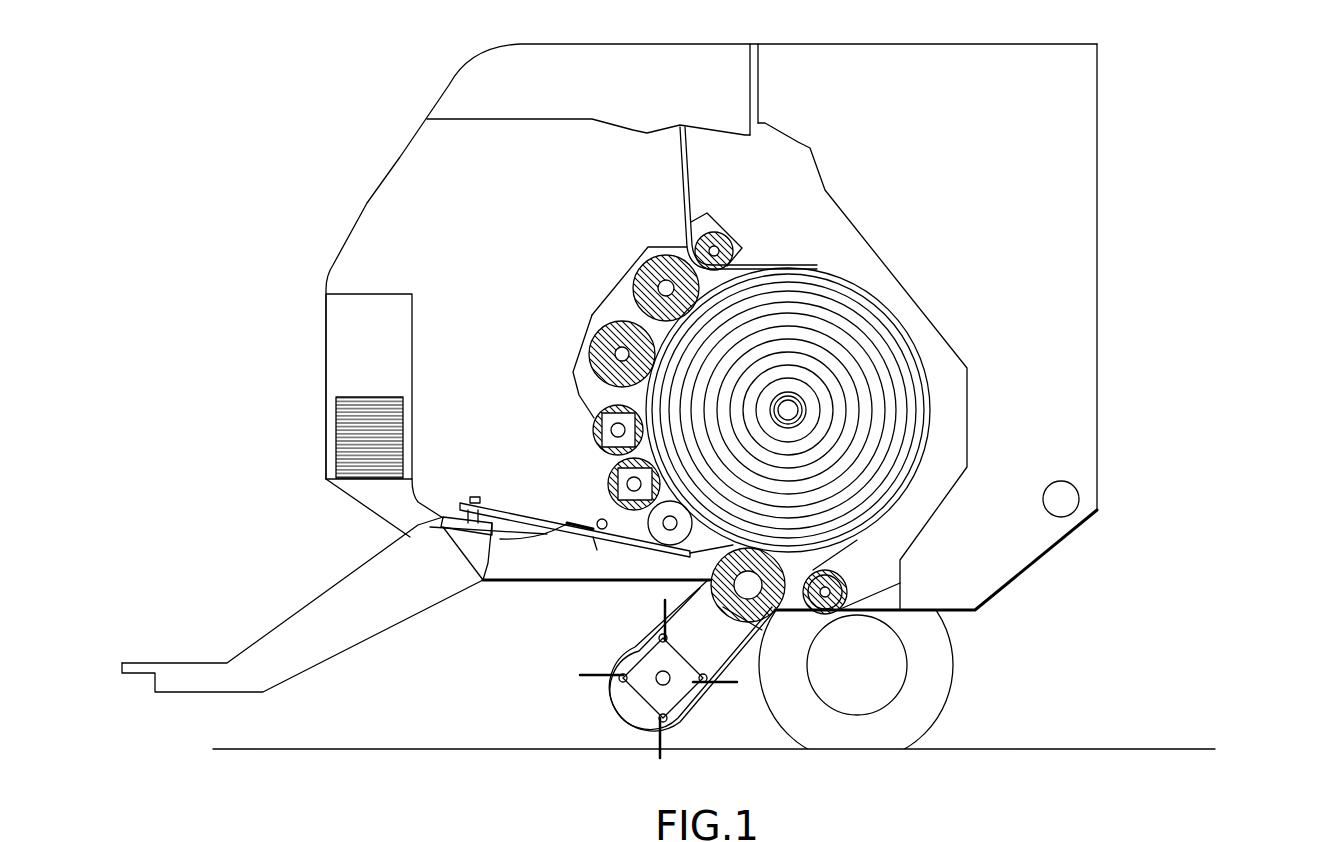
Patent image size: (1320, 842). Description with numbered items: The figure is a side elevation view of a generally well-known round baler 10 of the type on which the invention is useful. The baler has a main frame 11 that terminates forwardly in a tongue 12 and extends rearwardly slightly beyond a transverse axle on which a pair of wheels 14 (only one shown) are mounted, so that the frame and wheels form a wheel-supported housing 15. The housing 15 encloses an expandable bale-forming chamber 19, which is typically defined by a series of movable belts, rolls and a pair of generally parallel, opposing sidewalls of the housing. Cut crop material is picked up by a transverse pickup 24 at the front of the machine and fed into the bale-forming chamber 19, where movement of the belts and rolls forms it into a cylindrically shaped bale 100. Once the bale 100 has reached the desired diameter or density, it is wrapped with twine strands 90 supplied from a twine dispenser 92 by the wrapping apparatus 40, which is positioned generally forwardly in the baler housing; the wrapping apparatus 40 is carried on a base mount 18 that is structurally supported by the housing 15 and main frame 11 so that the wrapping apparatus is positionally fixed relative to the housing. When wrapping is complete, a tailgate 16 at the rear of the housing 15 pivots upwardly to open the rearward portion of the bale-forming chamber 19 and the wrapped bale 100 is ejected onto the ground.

The round baler 10 is at (325, 215).
The main frame 11 is at (587, 587).
The tongue 12 is at (253, 637).
The wheels 14 is at (947, 665).
The housing 15 is at (480, 92).
The tailgate 16 is at (1045, 247).
The base mount 18 is at (477, 537).
The bale-forming chamber 19 is at (775, 250).
The transverse pickup 24 is at (593, 700).
The wrapping apparatus 40 is at (462, 480).
The twine strands 90 is at (417, 500).
The twine dispenser 92 is at (357, 367).
The bale 100 is at (903, 435).